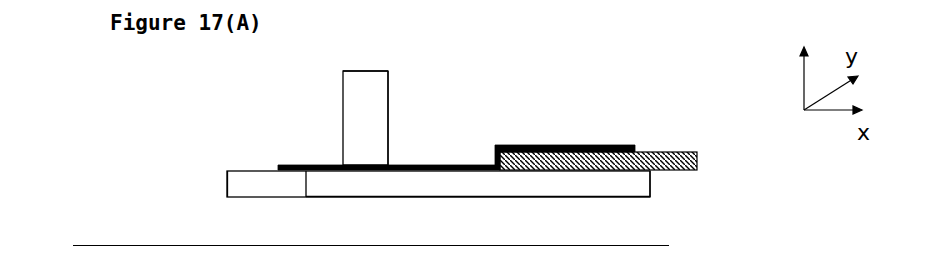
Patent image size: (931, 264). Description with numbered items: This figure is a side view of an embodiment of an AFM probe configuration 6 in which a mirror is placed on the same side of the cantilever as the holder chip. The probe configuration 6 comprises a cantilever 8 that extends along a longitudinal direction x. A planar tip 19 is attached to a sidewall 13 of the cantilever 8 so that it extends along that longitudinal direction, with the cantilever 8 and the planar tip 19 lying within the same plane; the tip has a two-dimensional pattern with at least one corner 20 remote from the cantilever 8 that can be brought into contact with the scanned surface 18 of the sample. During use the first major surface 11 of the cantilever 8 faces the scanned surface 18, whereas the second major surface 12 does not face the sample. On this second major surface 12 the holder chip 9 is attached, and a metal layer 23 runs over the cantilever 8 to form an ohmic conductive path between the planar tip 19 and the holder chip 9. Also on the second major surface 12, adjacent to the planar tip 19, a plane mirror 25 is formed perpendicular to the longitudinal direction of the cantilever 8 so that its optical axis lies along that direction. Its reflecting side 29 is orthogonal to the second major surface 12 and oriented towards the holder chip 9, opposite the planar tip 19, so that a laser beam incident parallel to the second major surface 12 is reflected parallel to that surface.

The probe configuration 6 is at (689, 82).
The cantilever 8 is at (456, 194).
The holder chip 9 is at (698, 160).
The first major surface of cantilever 11 is at (366, 198).
The second major surface of cantilever 12 is at (404, 118).
The sidewall of cantilever 13 is at (650, 183).
The scanned surface of sample 18 is at (102, 245).
The planar tip 19 is at (287, 194).
The corner of planar tip 20 is at (227, 198).
The metal layer 23 is at (513, 142).
The mirror perpendicular to the cantilever 25 is at (377, 125).
The reflecting side of the mirror 29 is at (388, 92).